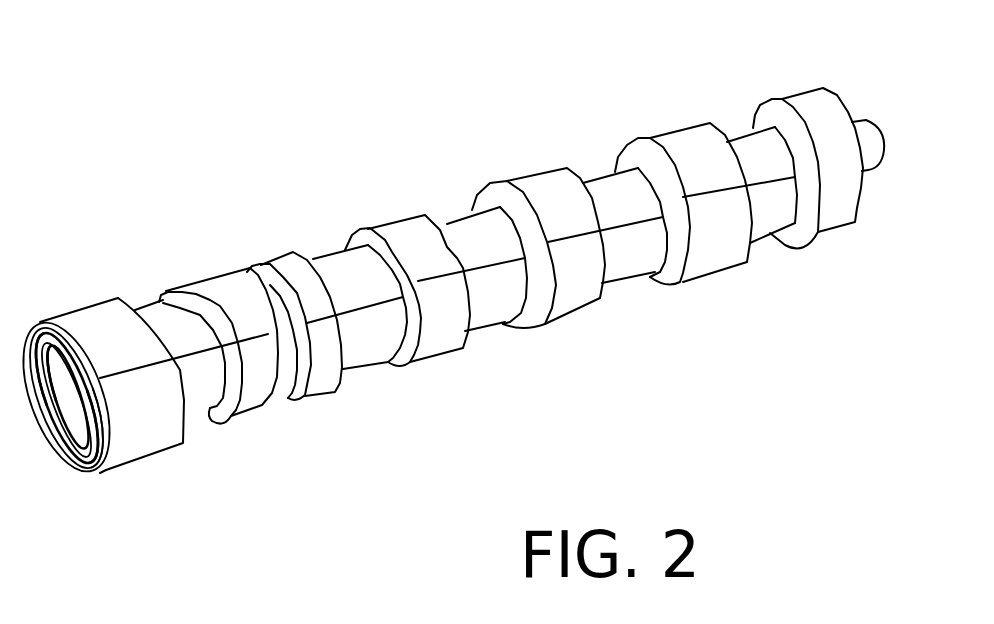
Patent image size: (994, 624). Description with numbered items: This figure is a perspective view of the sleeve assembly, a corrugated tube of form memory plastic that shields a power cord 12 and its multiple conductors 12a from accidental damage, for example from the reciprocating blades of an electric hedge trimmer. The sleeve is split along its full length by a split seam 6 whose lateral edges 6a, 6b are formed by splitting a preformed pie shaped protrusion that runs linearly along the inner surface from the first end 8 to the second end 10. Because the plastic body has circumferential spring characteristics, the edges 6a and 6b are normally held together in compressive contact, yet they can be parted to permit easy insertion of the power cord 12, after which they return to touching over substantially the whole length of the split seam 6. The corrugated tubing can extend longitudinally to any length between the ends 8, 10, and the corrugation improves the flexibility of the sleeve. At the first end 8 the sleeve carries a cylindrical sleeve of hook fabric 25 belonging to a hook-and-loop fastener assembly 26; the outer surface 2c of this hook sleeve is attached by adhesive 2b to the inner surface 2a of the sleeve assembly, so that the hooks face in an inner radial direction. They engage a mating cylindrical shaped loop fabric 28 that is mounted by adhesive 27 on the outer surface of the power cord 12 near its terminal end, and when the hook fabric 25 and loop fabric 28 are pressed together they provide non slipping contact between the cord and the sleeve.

The inner surface 2a is at (80, 427).
The adhesive 2b is at (78, 443).
The outer surface 2c is at (52, 340).
The split seam 6 is at (322, 302).
The lateral edge 6a is at (146, 367).
The lateral edge 6b is at (146, 367).
The first end 8 is at (855, 222).
The second end 10 is at (93, 478).
The power cord 12 is at (868, 132).
The conductors 12a is at (78, 392).
The hook fabric 25 is at (78, 455).
The hook-and-loop fastener assembly 26 is at (43, 323).
The adhesive 27 is at (58, 375).
The loop fabric 28 is at (62, 350).